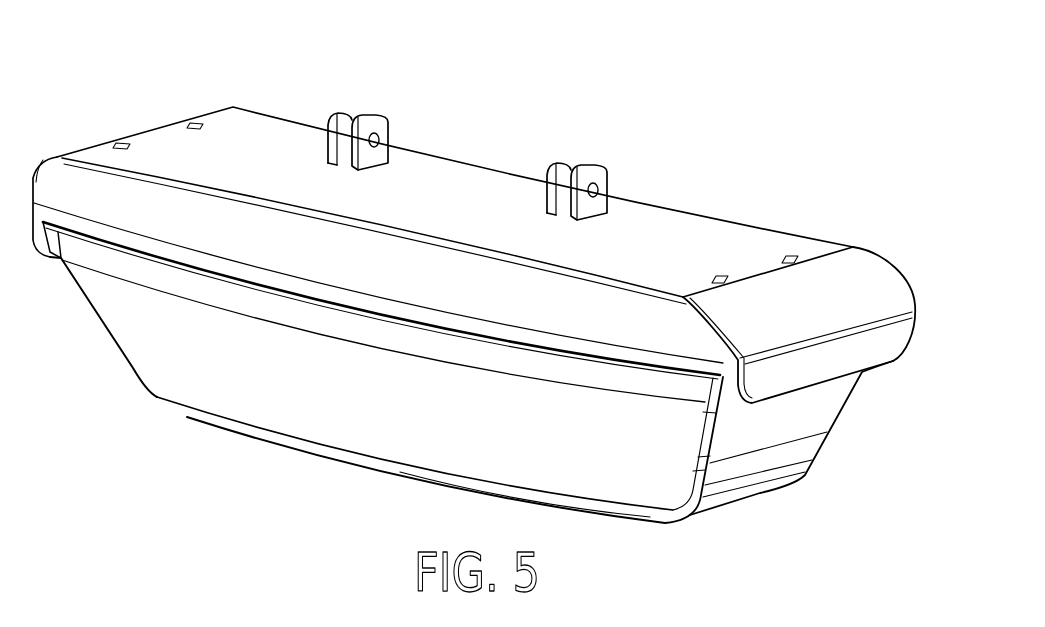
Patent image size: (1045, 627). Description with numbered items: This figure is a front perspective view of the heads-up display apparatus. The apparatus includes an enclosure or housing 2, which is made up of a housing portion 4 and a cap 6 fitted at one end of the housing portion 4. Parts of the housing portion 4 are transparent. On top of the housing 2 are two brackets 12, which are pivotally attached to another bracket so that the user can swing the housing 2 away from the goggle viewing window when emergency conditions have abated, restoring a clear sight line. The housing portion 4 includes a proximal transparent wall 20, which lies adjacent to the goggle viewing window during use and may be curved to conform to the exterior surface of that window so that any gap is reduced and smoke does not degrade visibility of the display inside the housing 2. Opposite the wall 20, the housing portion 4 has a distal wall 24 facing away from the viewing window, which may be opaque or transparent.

The housing 2 is at (485, 280).
The housing portion 4 is at (805, 475).
The cap 6 is at (880, 290).
The bracket 12 is at (386, 114).
The proximal transparent wall 20 is at (680, 212).
The distal wall 24 is at (133, 372).